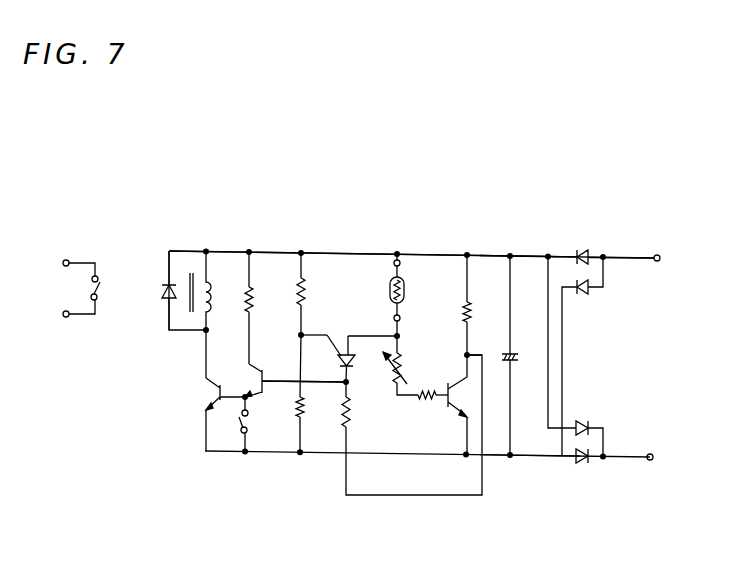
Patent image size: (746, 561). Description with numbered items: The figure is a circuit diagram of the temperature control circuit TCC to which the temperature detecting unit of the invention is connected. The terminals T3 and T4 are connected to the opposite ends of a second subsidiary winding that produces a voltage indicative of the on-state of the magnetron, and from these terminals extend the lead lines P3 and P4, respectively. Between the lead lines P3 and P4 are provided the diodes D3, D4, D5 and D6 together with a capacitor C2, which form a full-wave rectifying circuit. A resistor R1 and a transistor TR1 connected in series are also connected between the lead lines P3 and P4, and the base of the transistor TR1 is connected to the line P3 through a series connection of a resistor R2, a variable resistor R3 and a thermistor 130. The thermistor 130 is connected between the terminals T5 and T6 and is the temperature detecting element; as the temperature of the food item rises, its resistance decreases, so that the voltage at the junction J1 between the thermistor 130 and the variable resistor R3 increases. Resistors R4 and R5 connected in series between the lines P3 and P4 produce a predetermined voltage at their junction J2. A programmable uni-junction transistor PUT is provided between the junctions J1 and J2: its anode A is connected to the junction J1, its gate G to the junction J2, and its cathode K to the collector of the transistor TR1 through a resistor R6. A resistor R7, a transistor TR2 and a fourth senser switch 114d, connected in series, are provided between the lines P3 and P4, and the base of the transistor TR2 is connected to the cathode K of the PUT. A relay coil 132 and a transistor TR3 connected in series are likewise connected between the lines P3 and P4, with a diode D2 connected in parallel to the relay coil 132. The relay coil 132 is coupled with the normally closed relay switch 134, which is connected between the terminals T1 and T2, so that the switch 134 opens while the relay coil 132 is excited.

The terminal T1 is at (63, 256).
The terminal T2 is at (63, 322).
The normally closed relay switch 134 is at (100, 284).
The diode D2 is at (165, 287).
The relay coil 132 is at (213, 285).
The transistor TR2 is at (246, 366).
The transistor TR3 is at (208, 388).
The fourth senser switch 114d is at (239, 430).
The resistor R7 is at (262, 268).
The resistor R4 is at (303, 287).
The junction J2 is at (300, 334).
The resistor R5 is at (303, 403).
The programmable uni-junction transistor PUT is at (340, 366).
The gate G is at (337, 350).
The anode A is at (372, 329).
The cathode K is at (314, 382).
The resistor R6 is at (349, 408).
The thermistor 130 is at (389, 290).
The terminal T5 is at (400, 262).
The terminal T6 is at (399, 316).
The junction J1 is at (400, 336).
The variable resistor R3 is at (408, 365).
The resistor R2 is at (428, 398).
The transistor TR1 is at (448, 387).
The resistor R1 is at (468, 308).
The capacitor C2 is at (517, 353).
The lead line P3 is at (527, 255).
The lead line P4 is at (532, 458).
The diode D3 is at (585, 250).
The diode D4 is at (588, 290).
The diode D5 is at (583, 422).
The diode D6 is at (582, 465).
The terminal T3 is at (660, 258).
The terminal T4 is at (653, 457).
The temperature control circuit TCC is at (392, 194).